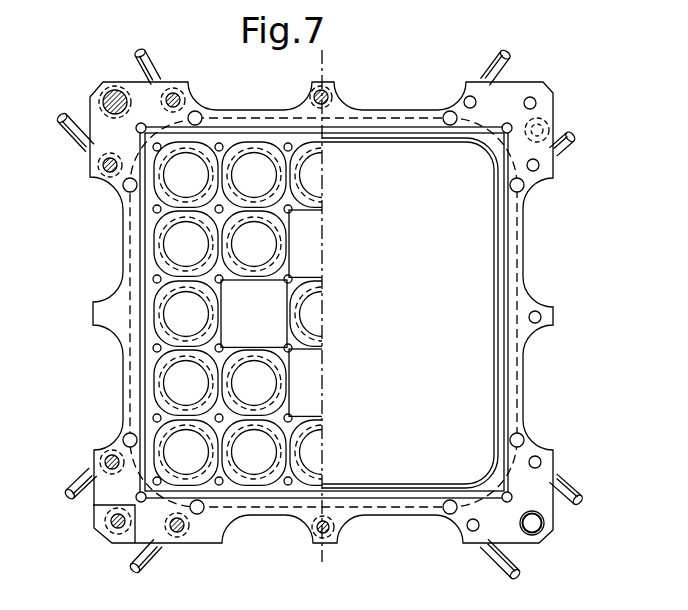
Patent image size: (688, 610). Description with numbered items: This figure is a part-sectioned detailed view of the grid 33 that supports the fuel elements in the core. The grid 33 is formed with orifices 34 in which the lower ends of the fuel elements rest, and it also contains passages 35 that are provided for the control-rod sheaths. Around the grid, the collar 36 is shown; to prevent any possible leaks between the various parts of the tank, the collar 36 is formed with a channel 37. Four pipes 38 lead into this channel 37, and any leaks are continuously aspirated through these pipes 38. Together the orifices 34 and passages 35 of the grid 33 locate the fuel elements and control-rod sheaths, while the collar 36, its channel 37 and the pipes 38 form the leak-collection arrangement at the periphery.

The grid 33 is at (222, 422).
The orifices 34 is at (319, 316).
The passages 35 is at (262, 325).
The collar 36 is at (546, 516).
The channel 37 is at (444, 497).
The pipes 38 is at (511, 495).